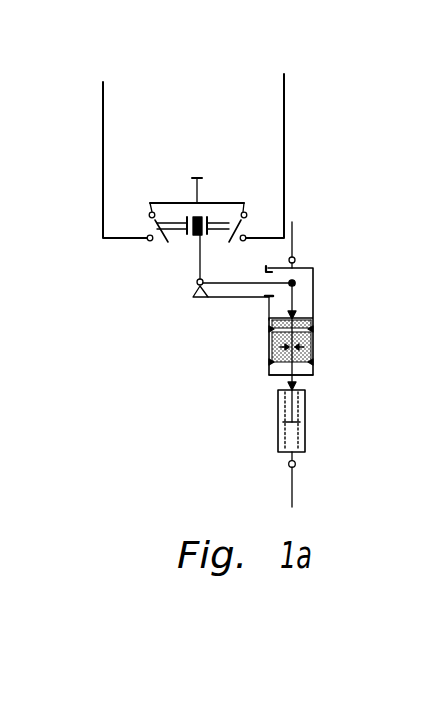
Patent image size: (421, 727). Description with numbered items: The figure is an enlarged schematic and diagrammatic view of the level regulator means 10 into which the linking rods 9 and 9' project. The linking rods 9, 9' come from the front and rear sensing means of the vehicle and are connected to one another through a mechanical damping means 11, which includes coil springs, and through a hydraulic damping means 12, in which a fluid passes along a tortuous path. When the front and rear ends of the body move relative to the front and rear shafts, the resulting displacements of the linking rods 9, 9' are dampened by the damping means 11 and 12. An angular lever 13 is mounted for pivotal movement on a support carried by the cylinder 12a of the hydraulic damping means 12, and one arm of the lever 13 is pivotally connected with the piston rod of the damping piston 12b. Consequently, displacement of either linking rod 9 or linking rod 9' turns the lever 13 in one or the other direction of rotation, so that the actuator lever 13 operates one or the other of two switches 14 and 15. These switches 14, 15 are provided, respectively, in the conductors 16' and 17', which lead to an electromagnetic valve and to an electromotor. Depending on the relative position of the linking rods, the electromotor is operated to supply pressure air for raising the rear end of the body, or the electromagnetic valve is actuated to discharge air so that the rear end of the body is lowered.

The level regulator means 10 is at (316, 120).
The conductor 16' is at (108, 160).
The conductor 17' is at (265, 156).
The switch 14 is at (149, 242).
The switch 15 is at (244, 242).
The angular lever 13 is at (195, 244).
The linking rod 9' is at (331, 245).
The hydraulic damping means 12 is at (314, 307).
The cylinder 12a is at (268, 305).
The damping piston 12b is at (300, 316).
The mechanical damping means 11 is at (306, 410).
The linking rod 9 is at (327, 484).